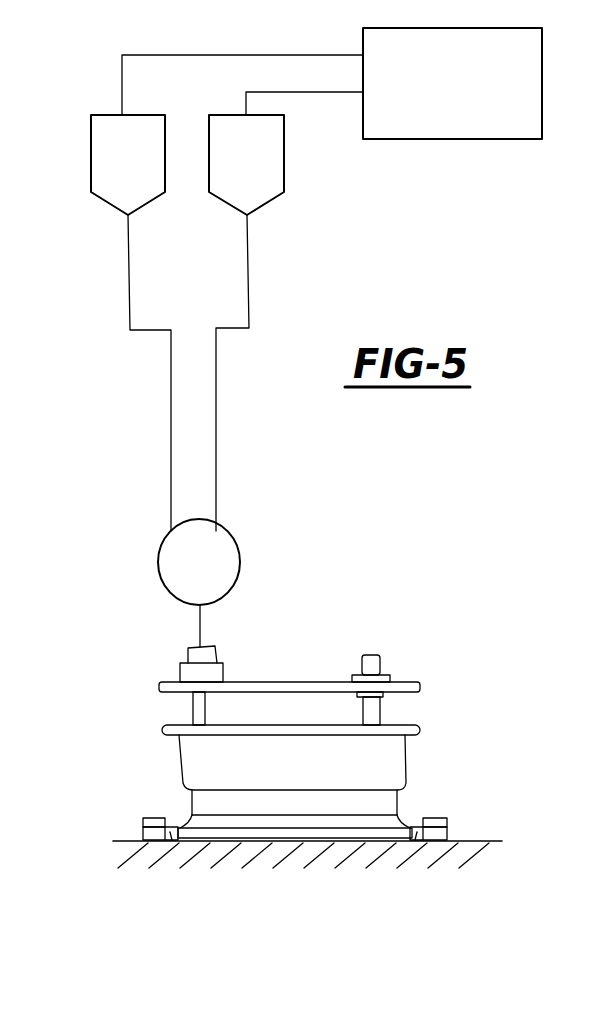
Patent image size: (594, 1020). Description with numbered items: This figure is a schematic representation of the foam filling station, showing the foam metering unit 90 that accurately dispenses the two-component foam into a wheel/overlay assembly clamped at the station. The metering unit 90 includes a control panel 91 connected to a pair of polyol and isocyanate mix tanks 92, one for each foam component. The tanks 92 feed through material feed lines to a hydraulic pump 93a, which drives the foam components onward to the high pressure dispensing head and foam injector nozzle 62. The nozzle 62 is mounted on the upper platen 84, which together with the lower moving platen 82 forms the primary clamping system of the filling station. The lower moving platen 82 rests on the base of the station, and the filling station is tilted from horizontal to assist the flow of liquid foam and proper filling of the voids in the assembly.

The control panel 91 is at (498, 139).
The polyol and isocyanate mix tanks 92 is at (155, 200).
The foam metering unit 90 is at (234, 431).
The hydraulic pump 93a is at (240, 573).
The foam injector nozzle 62 is at (223, 672).
The upper platen 84 is at (400, 681).
The lower moving platen 82 is at (470, 841).